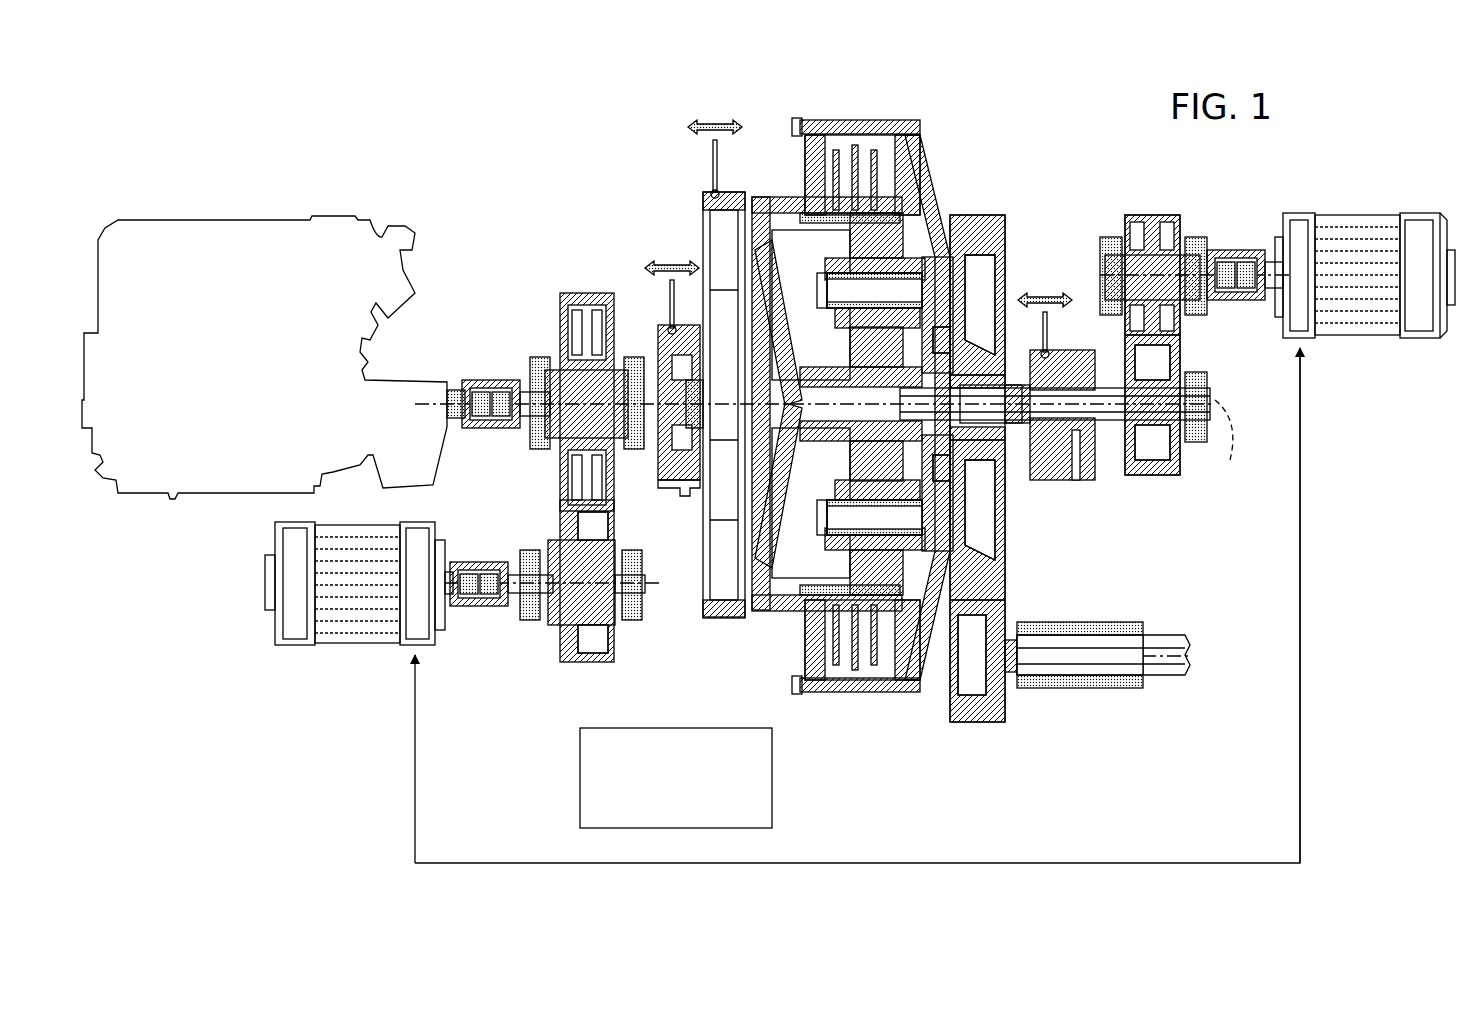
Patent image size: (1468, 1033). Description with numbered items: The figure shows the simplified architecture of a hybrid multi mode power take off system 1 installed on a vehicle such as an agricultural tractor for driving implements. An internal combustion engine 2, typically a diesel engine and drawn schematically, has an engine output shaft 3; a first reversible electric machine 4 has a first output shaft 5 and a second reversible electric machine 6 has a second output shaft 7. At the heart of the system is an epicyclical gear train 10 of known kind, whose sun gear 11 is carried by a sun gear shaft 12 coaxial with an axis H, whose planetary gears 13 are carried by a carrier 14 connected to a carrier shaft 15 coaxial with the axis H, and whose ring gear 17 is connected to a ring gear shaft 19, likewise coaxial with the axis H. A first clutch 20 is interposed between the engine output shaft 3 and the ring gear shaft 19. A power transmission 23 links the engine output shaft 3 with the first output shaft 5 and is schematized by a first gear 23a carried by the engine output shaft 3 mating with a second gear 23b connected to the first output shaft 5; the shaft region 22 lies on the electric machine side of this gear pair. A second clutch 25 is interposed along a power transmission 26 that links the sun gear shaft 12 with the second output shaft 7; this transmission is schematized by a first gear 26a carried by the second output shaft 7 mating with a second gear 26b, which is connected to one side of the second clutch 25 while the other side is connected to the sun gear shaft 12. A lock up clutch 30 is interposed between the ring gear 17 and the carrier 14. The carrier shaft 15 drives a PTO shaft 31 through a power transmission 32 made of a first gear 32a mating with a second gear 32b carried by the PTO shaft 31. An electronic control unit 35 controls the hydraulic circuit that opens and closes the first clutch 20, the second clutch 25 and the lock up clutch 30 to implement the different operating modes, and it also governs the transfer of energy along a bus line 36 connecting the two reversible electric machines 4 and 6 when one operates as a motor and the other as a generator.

The hybrid multi mode power take off system 1 is at (1045, 130).
The internal combustion engine 2 is at (258, 245).
The engine output shaft 3 is at (494, 375).
The first reversible electric machine 4 is at (300, 592).
The first output shaft 5 is at (466, 615).
The second reversible electric machine 6 is at (1360, 292).
The second output shaft 7 is at (1237, 250).
The epicyclical gear train 10 is at (925, 100).
The sun gear 11 is at (868, 358).
The sun gear shaft 12 is at (1000, 412).
The planetary gears 13 is at (858, 268).
The carrier 14 is at (1015, 275).
The carrier shaft 15 is at (1002, 368).
The ring gear 17 is at (862, 118).
The ring gear shaft 19 is at (748, 398).
The first clutch 20 is at (712, 472).
The intermediate shaft 22 is at (525, 655).
The power transmission 23 is at (558, 505).
The first gear 23a is at (585, 320).
The second gear 23b is at (572, 642).
The second clutch 25 is at (1095, 482).
The power transmission 26 is at (1195, 340).
The first gear 26a is at (1148, 214).
The second gear 26b is at (1160, 462).
The lock up clutch 30 is at (790, 165).
The PTO shaft 31 is at (1160, 672).
The power transmission 32 is at (935, 688).
The first gear 32a is at (995, 580).
The second gear 32b is at (1000, 692).
The electronic control unit 35 is at (718, 778).
The bus line 36 is at (1300, 645).
The axis H is at (1223, 442).